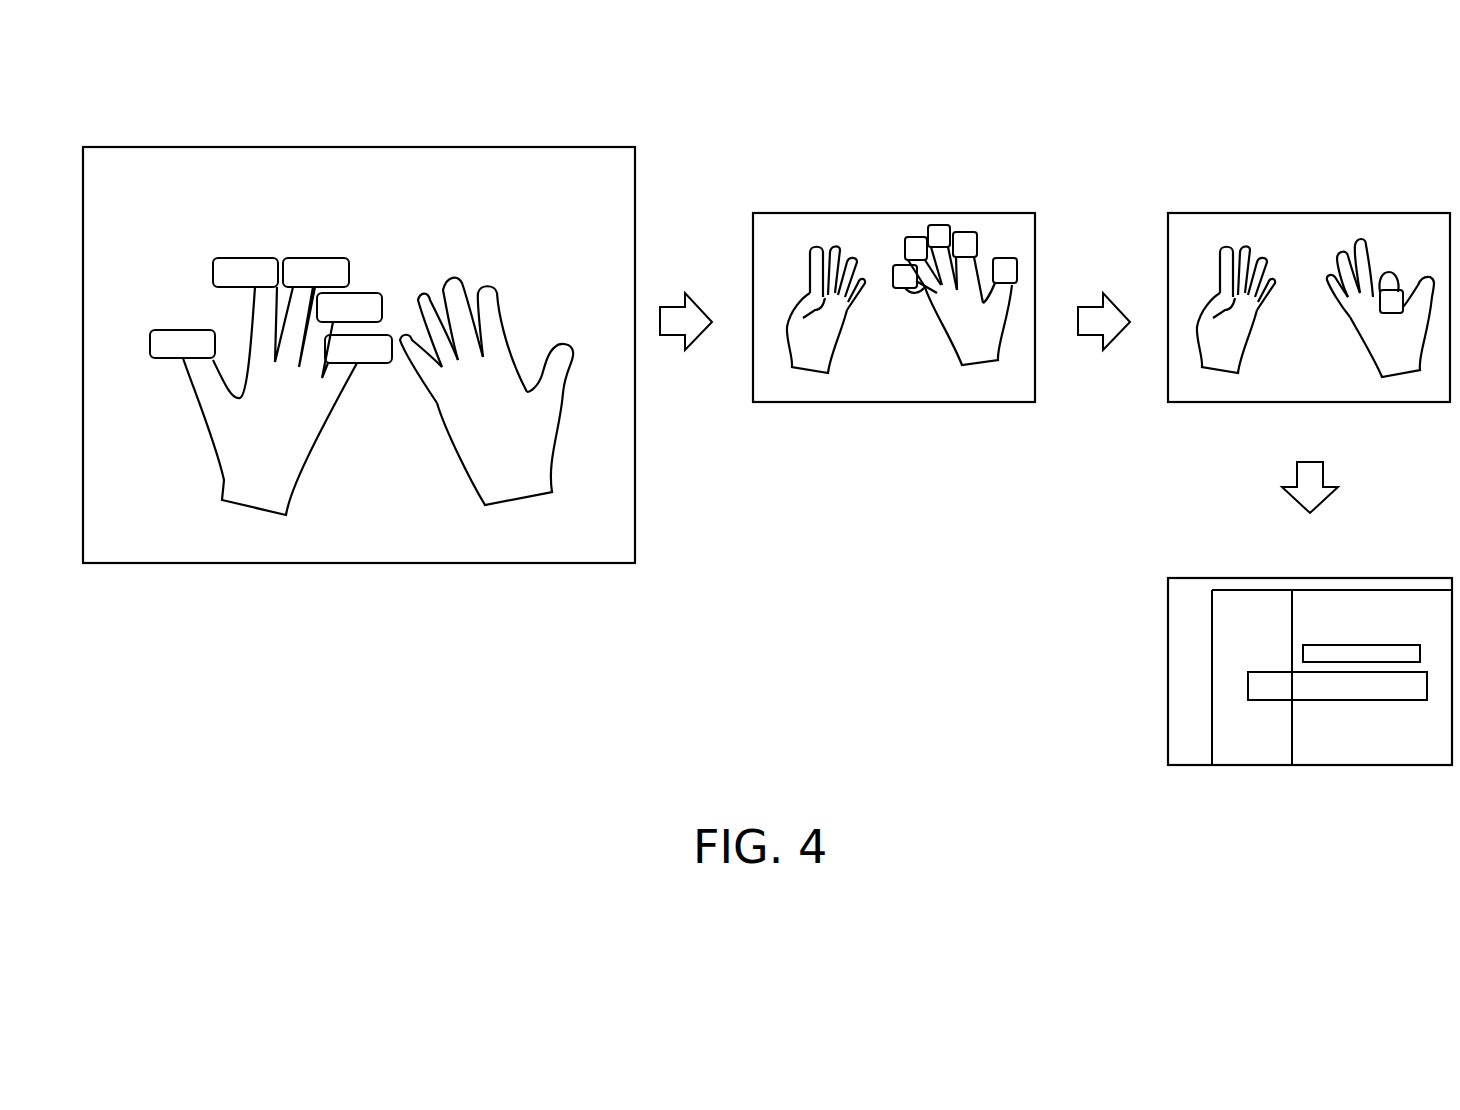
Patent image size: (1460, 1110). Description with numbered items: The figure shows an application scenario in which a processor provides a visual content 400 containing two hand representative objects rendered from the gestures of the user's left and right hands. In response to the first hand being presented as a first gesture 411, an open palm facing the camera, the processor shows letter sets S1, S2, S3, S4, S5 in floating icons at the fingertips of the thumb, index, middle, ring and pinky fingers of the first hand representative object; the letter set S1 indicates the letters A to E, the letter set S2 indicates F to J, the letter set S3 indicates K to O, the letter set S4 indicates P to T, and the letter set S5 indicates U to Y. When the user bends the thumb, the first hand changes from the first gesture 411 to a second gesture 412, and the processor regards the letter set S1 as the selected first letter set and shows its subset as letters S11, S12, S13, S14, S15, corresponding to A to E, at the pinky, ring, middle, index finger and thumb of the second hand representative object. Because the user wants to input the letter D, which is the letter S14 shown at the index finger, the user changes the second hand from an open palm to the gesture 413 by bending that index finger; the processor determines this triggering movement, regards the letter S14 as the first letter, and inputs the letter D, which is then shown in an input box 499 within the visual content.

The visual content 400 is at (496, 198).
The first gesture 411 is at (267, 480).
The second gesture 412 is at (812, 360).
The gesture 413 is at (1368, 297).
The input box 499 is at (1257, 697).
The letter set S1 is at (195, 330).
The letter set S2 is at (246, 258).
The letter set S3 is at (316, 258).
The letter set S4 is at (360, 293).
The letter set S5 is at (360, 363).
The letter S11 is at (905, 265).
The letter S12 is at (915, 237).
The letter S13 is at (936, 225).
The letter S14 is at (965, 232).
The letter S15 is at (1005, 258).